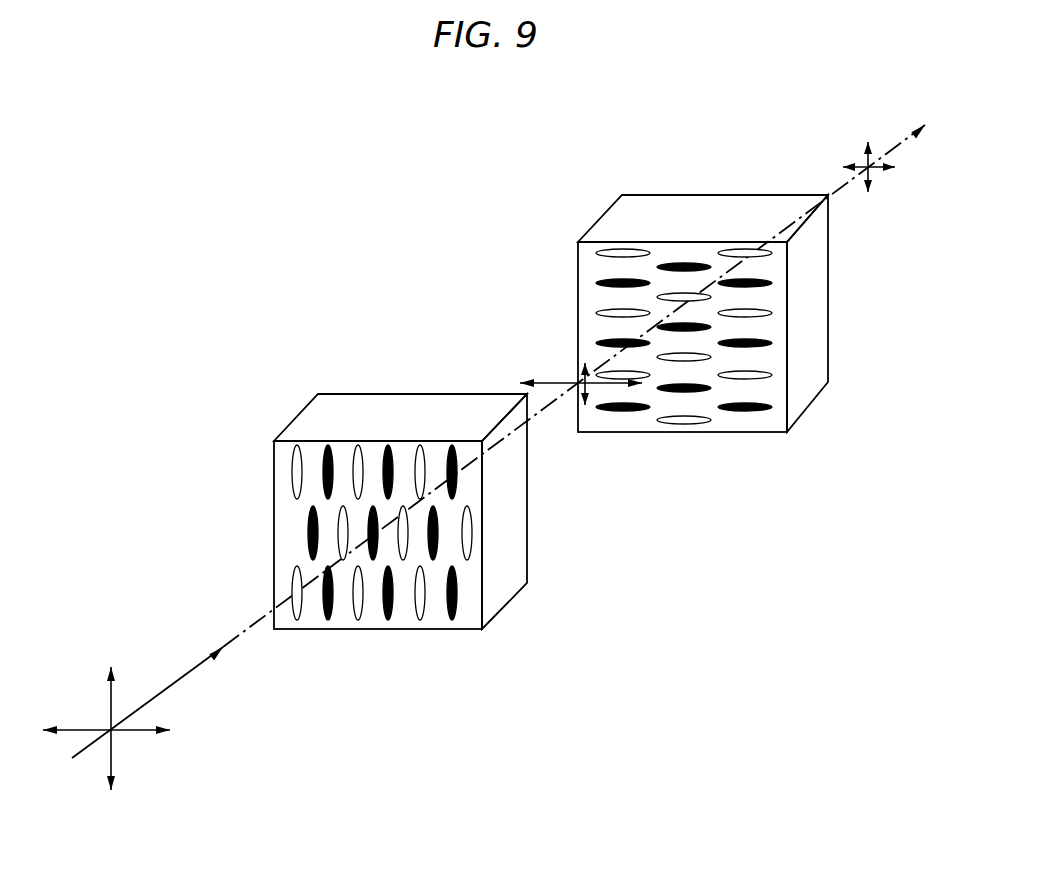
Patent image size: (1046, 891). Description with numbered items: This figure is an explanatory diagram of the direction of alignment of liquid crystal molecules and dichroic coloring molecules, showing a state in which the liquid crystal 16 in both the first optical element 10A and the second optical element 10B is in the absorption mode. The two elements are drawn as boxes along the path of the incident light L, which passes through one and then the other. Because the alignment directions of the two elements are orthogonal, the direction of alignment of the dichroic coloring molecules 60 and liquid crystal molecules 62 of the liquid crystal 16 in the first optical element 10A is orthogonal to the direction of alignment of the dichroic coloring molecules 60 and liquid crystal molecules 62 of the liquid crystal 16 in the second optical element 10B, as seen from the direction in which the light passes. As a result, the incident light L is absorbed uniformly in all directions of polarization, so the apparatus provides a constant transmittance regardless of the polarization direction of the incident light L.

The first optical element 10A is at (370, 395).
The second optical element 10B is at (671, 197).
The liquid crystal 16 is at (463, 398).
The dichroic coloring molecules 60 is at (458, 588).
The liquid crystal molecules 62 is at (471, 528).
The incident light L is at (187, 675).